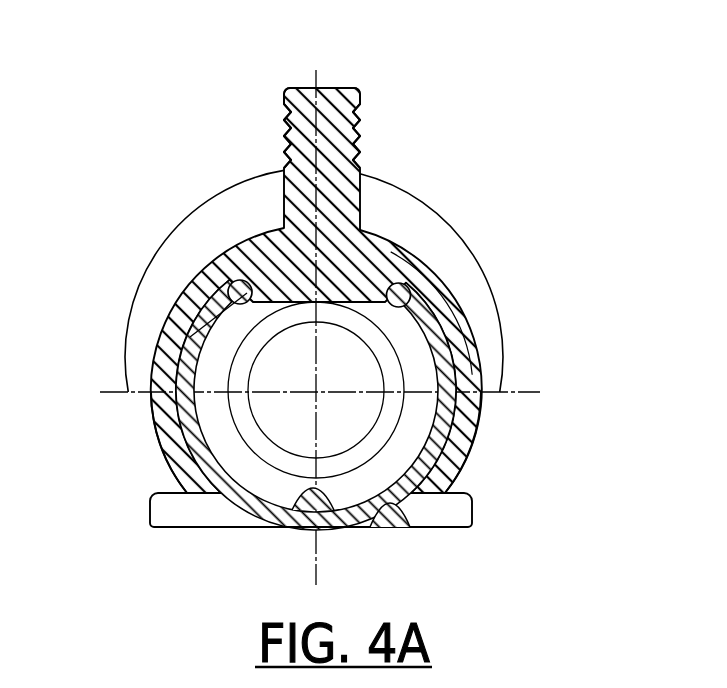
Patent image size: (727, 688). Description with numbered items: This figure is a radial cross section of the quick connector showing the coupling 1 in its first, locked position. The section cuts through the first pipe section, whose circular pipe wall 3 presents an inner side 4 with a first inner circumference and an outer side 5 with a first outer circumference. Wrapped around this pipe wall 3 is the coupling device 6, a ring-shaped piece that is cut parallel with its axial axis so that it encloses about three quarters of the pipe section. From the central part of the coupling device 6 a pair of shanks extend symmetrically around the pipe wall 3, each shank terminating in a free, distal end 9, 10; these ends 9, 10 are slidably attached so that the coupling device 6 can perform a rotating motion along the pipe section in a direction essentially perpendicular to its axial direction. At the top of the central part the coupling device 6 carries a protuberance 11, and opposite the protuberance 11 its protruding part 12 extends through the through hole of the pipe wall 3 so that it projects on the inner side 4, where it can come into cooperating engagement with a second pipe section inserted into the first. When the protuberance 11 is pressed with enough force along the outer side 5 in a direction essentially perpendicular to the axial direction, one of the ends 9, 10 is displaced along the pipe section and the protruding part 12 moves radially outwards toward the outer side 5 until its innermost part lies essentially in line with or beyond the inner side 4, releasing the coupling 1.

The coupling 1 is at (488, 133).
The pipe wall 3 is at (407, 527).
The inner side 4 is at (373, 505).
The outer side 5 is at (283, 523).
The coupling device 6 is at (382, 262).
The free distal end 9 is at (170, 458).
The free distal end 10 is at (462, 447).
The protuberance 11 is at (340, 93).
The protruding part 12 is at (250, 336).